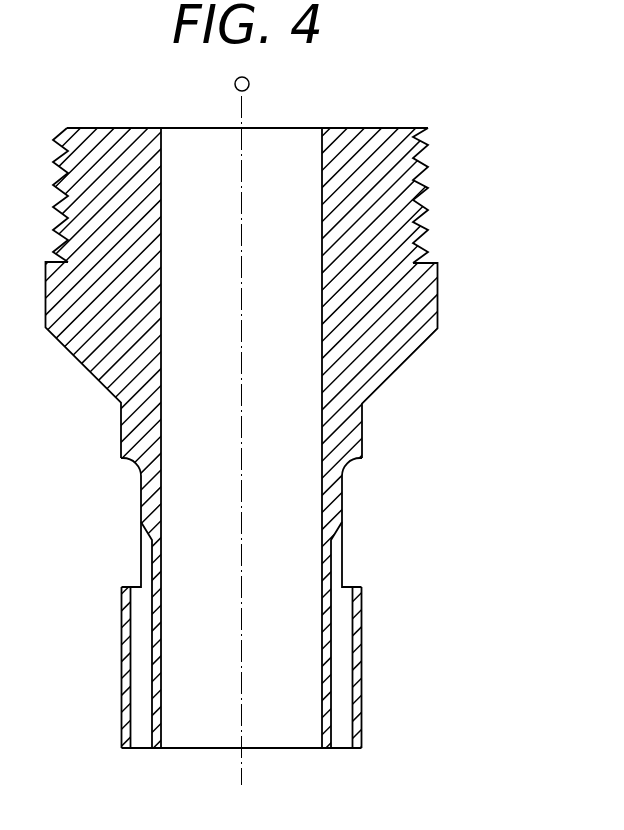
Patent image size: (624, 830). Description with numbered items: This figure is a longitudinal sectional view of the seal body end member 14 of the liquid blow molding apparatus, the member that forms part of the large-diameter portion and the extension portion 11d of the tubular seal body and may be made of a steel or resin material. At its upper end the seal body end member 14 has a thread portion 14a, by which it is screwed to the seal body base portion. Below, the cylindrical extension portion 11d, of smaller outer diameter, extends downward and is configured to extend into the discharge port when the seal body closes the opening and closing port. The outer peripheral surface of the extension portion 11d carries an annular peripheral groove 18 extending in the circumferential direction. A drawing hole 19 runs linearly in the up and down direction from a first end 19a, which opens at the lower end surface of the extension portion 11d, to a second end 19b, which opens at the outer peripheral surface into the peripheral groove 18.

The seal body end member 14 is at (312, 440).
The thread portion 14a is at (427, 193).
The peripheral groove 18 is at (343, 495).
The drawing hole 19 is at (281, 658).
The second end 19b is at (343, 552).
The first end 19a is at (342, 750).
The extension portion 11d is at (360, 713).